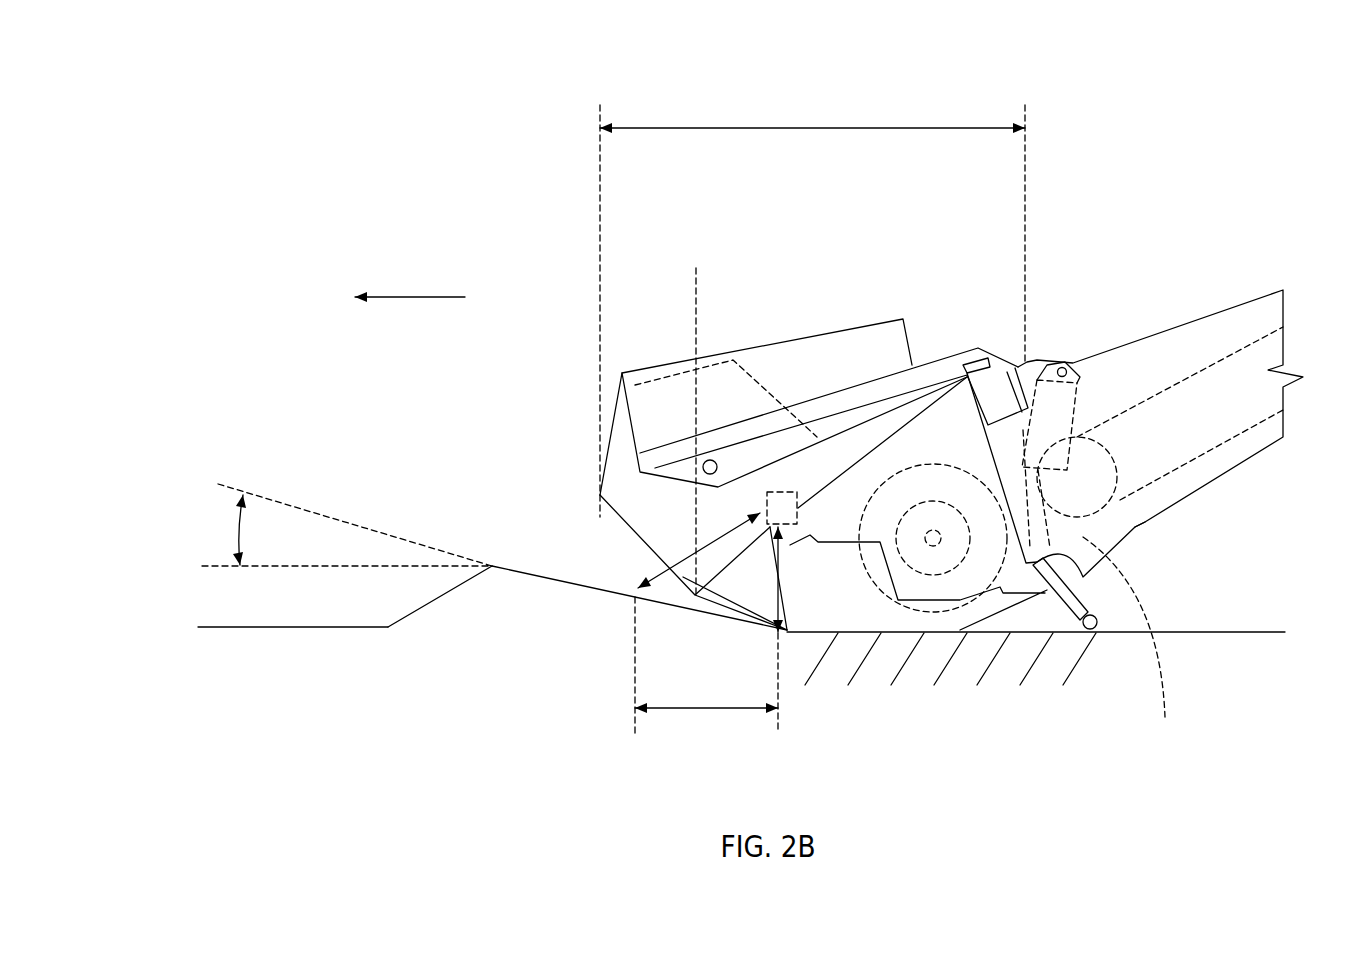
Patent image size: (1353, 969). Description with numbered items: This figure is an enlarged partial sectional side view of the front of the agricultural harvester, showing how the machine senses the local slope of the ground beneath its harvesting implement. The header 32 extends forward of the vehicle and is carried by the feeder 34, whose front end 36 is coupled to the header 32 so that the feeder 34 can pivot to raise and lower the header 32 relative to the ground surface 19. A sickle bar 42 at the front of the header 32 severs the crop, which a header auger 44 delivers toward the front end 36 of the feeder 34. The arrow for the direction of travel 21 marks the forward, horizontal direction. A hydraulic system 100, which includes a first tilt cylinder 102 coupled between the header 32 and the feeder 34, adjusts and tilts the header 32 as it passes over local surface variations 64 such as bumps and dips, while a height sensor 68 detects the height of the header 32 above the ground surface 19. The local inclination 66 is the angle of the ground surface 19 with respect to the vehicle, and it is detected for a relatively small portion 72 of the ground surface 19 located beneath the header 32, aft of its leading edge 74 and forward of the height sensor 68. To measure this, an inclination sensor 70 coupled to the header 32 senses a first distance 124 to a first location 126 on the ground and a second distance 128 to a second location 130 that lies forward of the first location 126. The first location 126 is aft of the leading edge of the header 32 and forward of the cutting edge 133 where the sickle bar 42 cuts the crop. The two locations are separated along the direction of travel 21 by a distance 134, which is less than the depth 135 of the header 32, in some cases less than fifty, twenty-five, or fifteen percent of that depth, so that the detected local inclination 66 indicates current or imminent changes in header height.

The ground surface 19 is at (1250, 612).
The direction of travel 21 is at (418, 297).
The header 32 is at (662, 323).
The feeder 34 is at (1108, 298).
The front end of the feeder 36 is at (987, 447).
The sickle bar 42 is at (686, 590).
The header auger 44 is at (942, 577).
The local surface variations 64 is at (490, 561).
The local inclination 66 is at (232, 532).
The height sensor 68 is at (1045, 582).
The inclination sensor 70 is at (790, 482).
The portion of the ground surface 72 is at (726, 618).
The leading edge 74 is at (597, 436).
The hydraulic system 100 is at (1112, 542).
The first tilt cylinder 102 is at (1133, 645).
The first distance 124 is at (780, 578).
The first location 126 is at (772, 632).
The second distance 128 is at (655, 562).
The second location 130 is at (636, 588).
The cutting edge 133 is at (698, 298).
The distance 134 is at (722, 710).
The depth of the header 135 is at (813, 127).